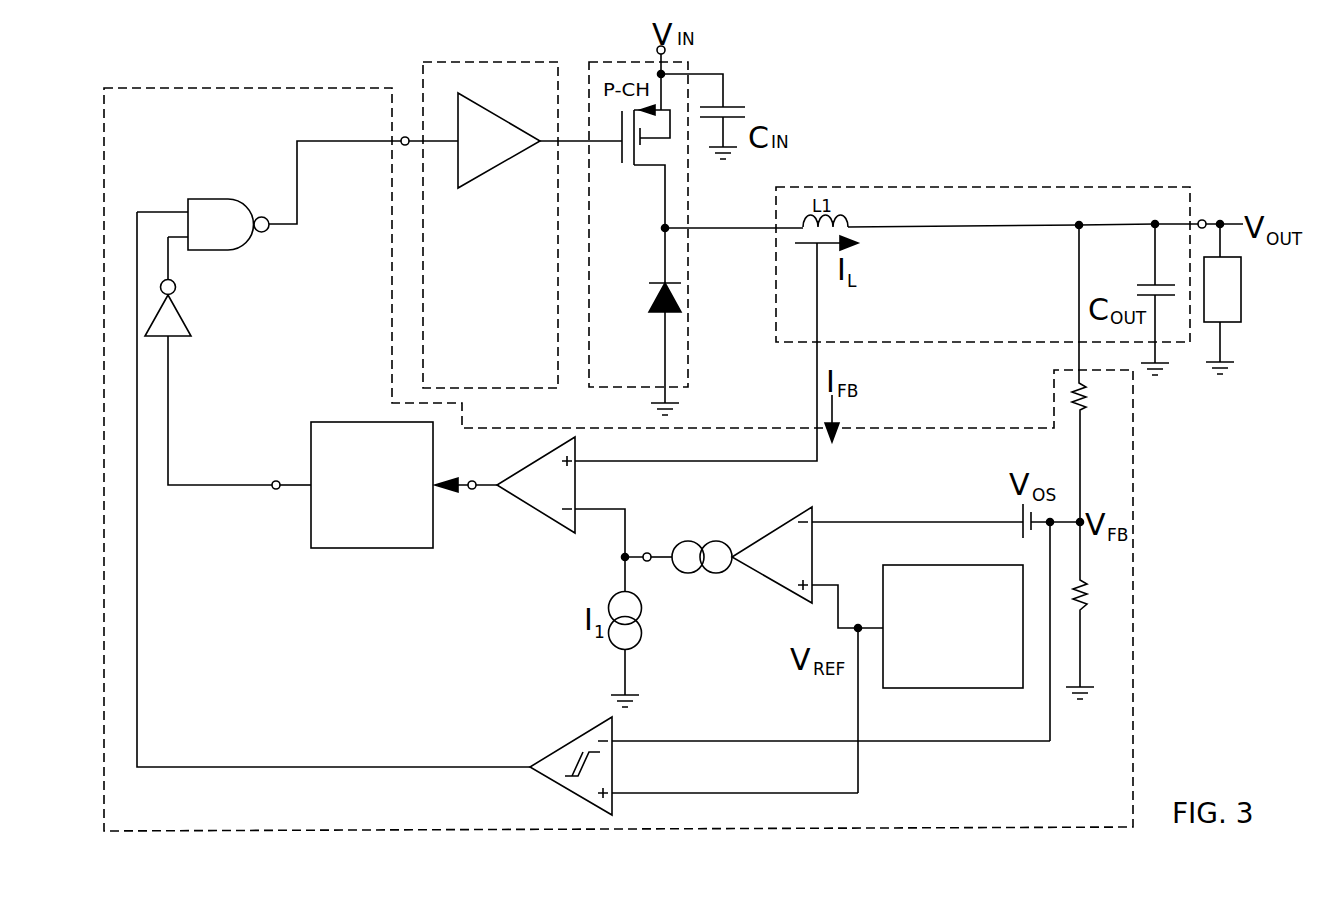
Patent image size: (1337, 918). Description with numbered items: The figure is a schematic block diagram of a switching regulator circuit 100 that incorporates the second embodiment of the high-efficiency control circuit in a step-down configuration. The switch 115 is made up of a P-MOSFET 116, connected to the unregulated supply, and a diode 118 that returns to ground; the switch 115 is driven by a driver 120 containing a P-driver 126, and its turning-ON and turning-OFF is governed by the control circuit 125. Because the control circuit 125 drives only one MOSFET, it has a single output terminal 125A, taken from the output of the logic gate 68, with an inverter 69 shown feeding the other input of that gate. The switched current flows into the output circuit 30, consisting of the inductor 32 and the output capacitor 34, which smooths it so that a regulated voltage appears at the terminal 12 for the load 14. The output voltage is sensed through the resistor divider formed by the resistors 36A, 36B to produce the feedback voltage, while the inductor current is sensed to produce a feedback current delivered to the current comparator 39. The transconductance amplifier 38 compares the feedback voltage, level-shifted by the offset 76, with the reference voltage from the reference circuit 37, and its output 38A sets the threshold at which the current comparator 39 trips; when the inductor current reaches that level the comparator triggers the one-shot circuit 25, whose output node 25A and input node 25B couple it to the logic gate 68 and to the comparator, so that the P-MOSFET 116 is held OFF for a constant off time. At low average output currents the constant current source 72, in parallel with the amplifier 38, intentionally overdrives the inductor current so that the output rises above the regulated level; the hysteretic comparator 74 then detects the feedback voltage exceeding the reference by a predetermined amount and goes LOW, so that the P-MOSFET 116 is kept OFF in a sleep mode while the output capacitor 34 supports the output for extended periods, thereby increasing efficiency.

The switching regulator circuit 100 is at (887, 153).
The control circuit 125 is at (1133, 546).
The output terminal 125A is at (405, 137).
The driver 120 is at (458, 62).
The P-driver 126 is at (483, 176).
The switch 115 is at (630, 62).
The P-MOSFET 116 is at (647, 167).
The diode 118 is at (650, 303).
The NAND gate 68 is at (208, 199).
The inverter 69 is at (180, 303).
The one-shot circuit 25 is at (385, 550).
The one-shot output node 25A is at (277, 481).
The one-shot input node 25B is at (472, 489).
The current comparator 39 is at (548, 518).
The output of transconductance amplifier 38A is at (650, 552).
The transconductance amplifier 38 is at (760, 573).
The constant current source 72 is at (643, 645).
The hysteretic comparator 74 is at (567, 742).
The offset 76 is at (1020, 505).
The reference circuit 37 is at (977, 689).
The resistor 36A is at (1088, 398).
The resistor 36B is at (1088, 598).
The output circuit 30 is at (938, 187).
The inductor 32 is at (850, 216).
The output capacitor 34 is at (1145, 282).
The terminal 12 is at (1203, 219).
The load 14 is at (1228, 323).